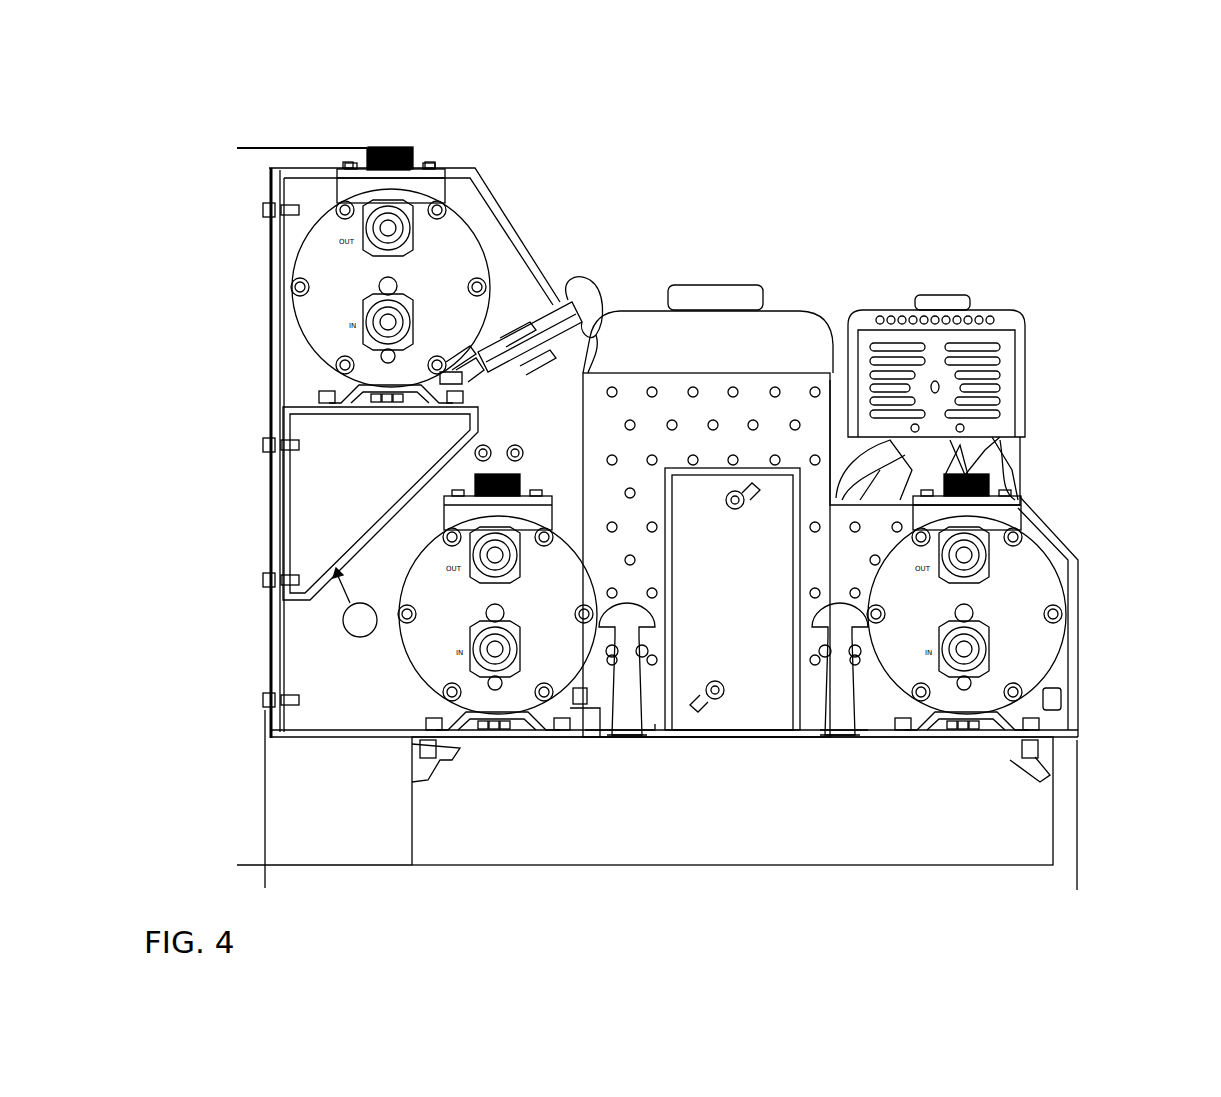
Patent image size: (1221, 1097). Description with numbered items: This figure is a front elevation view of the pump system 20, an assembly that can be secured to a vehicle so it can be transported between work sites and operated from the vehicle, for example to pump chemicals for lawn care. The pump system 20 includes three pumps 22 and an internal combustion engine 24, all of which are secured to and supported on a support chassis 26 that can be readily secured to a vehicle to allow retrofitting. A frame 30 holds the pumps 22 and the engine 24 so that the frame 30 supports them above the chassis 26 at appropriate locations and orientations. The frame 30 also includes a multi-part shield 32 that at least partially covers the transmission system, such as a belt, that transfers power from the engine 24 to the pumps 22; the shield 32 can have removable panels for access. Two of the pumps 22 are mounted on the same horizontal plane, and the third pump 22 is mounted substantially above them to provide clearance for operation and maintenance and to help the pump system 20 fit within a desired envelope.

The pump system 20 is at (1182, 165).
The pump 22 is at (295, 258).
The internal combustion engine 24 is at (1020, 303).
The support chassis 26 is at (1055, 813).
The frame 30 is at (445, 152).
The multi-part shield 32 is at (522, 237).